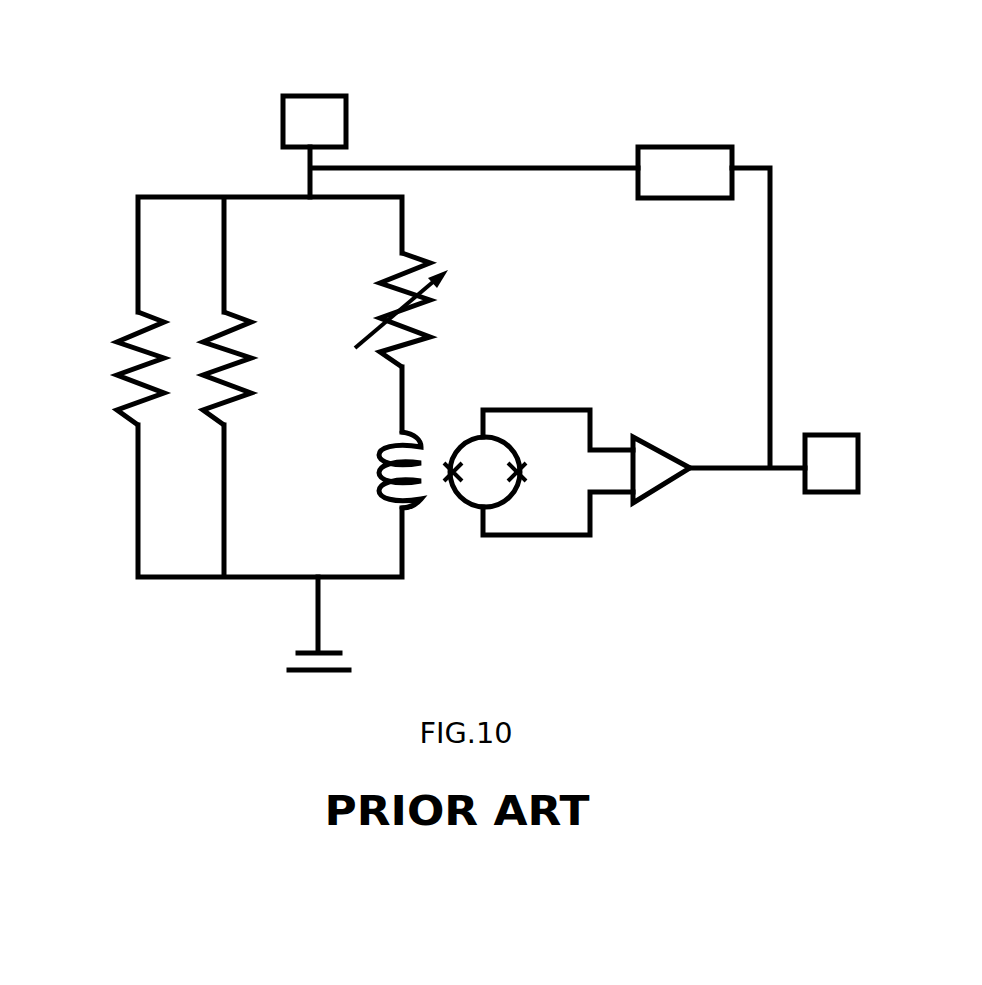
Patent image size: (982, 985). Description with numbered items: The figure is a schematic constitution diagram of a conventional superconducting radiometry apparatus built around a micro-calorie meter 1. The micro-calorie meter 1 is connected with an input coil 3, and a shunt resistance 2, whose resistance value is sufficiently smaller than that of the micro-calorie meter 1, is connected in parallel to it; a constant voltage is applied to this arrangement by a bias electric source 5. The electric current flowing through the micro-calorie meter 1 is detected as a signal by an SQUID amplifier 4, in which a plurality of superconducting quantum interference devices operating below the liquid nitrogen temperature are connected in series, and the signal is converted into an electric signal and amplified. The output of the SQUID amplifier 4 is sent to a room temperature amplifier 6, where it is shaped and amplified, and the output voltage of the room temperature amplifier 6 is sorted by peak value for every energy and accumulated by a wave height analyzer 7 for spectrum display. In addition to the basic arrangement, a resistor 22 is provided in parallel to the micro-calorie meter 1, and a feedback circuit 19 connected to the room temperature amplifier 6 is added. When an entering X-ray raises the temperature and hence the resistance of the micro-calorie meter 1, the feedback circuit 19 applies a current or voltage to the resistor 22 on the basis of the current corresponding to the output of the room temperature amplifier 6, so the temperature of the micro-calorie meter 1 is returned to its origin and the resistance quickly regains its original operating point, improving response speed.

The micro-calorie meter 1 is at (448, 272).
The shunt resistance 2 is at (117, 412).
The resistor 22 is at (207, 373).
The input coil 3 is at (408, 510).
The SQUID amplifier 4 is at (493, 432).
The bias electric source 5 is at (342, 95).
The room temperature amplifier 6 is at (650, 442).
The wave height analyzer 7 is at (818, 492).
The feedback circuit 19 is at (670, 147).